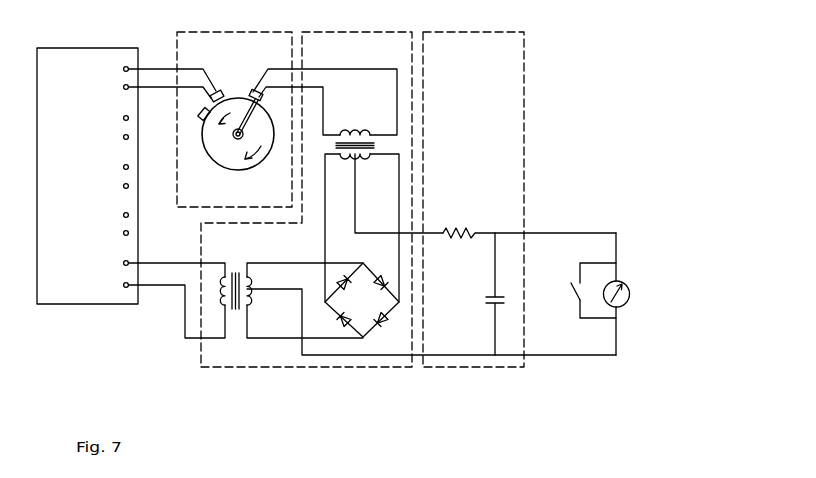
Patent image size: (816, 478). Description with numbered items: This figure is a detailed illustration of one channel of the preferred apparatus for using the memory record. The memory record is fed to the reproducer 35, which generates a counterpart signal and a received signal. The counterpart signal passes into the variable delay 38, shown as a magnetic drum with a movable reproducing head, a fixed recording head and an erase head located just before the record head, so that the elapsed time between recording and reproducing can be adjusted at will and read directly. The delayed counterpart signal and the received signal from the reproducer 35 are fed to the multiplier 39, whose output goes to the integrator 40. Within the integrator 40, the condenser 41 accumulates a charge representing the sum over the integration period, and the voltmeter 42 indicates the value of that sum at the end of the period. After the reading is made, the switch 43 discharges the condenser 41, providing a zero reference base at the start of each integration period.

The reproducer 35 is at (98, 45).
The variable delay 38 is at (253, 36).
The multiplier 39 is at (389, 35).
The integrator 40 is at (473, 35).
The condenser 41 is at (501, 294).
The voltmeter 42 is at (647, 294).
The switch 43 is at (579, 290).